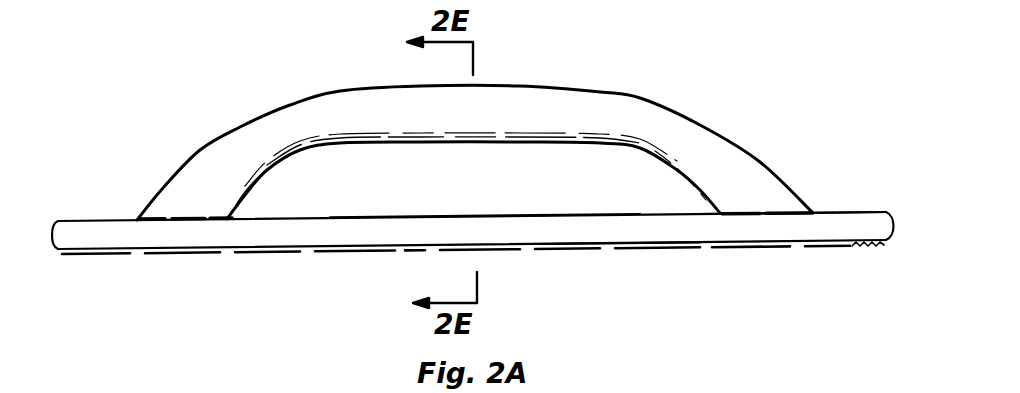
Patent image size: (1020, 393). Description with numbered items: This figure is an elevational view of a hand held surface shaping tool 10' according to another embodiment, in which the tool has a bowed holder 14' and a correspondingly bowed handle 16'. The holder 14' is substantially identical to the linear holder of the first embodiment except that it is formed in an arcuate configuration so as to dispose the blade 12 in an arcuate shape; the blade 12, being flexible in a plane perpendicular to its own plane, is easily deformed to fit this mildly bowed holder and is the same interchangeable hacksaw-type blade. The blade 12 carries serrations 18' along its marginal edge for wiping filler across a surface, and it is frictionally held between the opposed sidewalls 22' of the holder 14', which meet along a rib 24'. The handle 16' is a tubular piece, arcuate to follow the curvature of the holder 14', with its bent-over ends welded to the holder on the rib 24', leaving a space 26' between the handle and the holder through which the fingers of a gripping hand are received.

The tool 10' is at (475, 128).
The blade 12 is at (857, 248).
The bowed holder 14' is at (793, 178).
The bowed handle 16' is at (475, 140).
The serrations 18' is at (620, 268).
The sidewalls 22' is at (473, 254).
The rib 24' is at (485, 191).
The space 26' is at (473, 128).